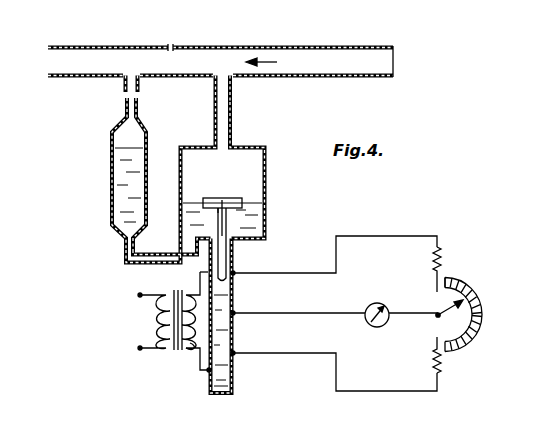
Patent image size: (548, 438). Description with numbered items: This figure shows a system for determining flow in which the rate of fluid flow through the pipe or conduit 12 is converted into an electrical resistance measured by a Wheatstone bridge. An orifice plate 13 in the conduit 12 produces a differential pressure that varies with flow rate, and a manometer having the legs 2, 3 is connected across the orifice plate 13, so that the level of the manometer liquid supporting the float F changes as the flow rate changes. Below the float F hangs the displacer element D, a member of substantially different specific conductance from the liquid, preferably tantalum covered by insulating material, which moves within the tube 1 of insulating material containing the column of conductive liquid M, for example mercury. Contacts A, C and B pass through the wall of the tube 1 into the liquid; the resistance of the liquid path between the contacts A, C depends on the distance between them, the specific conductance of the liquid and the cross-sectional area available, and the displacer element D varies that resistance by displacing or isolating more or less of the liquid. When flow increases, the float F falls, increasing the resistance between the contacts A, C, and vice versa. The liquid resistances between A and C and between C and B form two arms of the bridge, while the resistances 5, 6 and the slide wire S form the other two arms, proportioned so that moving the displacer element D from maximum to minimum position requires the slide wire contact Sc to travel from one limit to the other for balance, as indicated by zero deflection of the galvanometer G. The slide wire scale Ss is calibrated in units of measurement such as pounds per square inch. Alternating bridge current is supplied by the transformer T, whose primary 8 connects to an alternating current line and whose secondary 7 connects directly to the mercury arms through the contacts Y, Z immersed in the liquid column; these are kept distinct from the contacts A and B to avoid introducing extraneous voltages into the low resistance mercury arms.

The pipe or conduit 12 is at (318, 73).
The orifice plate 13 is at (170, 62).
The manometer leg 3 is at (113, 177).
The manometer leg 2 is at (267, 193).
The float F is at (220, 197).
The tube 1 is at (237, 302).
The contact Y is at (210, 270).
The displacer element D is at (235, 255).
The contact A is at (233, 276).
The contact C is at (234, 315).
The contact B is at (236, 355).
The contact Z is at (208, 372).
The column of conductive liquid M is at (227, 387).
The transformer T is at (189, 321).
The primary 8 is at (158, 331).
The secondary 7 is at (190, 347).
The resistance 5 is at (443, 256).
The resistance 6 is at (442, 367).
The galvanometer G is at (370, 303).
The slide wire S is at (455, 323).
The slide wire contact Sc is at (447, 308).
The slide wire scale Ss is at (468, 278).